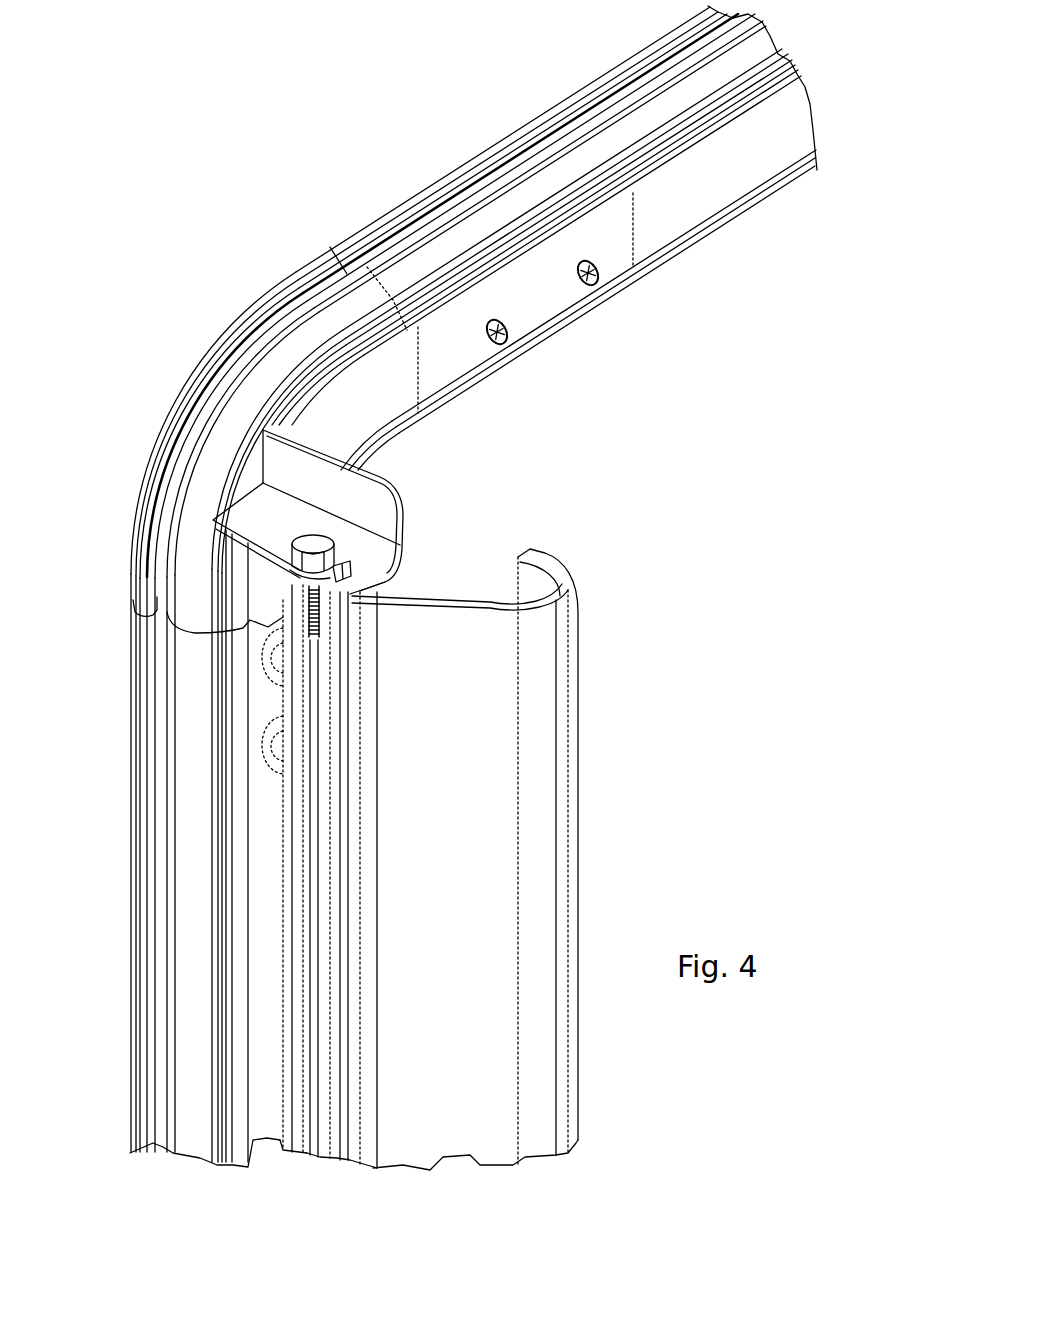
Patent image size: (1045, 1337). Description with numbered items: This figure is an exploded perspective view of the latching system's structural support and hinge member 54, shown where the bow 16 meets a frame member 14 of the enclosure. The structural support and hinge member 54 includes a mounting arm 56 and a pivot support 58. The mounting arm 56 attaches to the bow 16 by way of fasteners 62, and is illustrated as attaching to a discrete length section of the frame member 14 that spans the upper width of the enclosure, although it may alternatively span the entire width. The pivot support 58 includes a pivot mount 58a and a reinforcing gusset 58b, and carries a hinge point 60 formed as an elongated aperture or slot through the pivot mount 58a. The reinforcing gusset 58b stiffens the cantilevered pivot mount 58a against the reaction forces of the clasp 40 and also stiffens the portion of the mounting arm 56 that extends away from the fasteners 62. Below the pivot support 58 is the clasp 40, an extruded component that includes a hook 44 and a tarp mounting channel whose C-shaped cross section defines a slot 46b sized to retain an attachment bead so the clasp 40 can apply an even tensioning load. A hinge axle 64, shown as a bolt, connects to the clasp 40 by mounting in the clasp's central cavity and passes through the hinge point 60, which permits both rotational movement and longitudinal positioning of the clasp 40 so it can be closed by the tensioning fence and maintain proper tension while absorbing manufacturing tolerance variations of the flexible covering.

The bow 16 is at (302, 158).
The frame member 14 is at (700, 197).
The structural support and hinge member 54 is at (296, 380).
The mounting arm 56 is at (537, 293).
The fasteners 62 is at (500, 330).
The pivot support 58 is at (404, 479).
The pivot mount 58a is at (270, 523).
The reinforcing gusset 58b is at (347, 478).
The hinge axle 64 is at (313, 548).
The hinge point 60 is at (345, 575).
The clasp 40 is at (476, 648).
The slot 46b is at (313, 750).
The hook 44 is at (288, 1095).